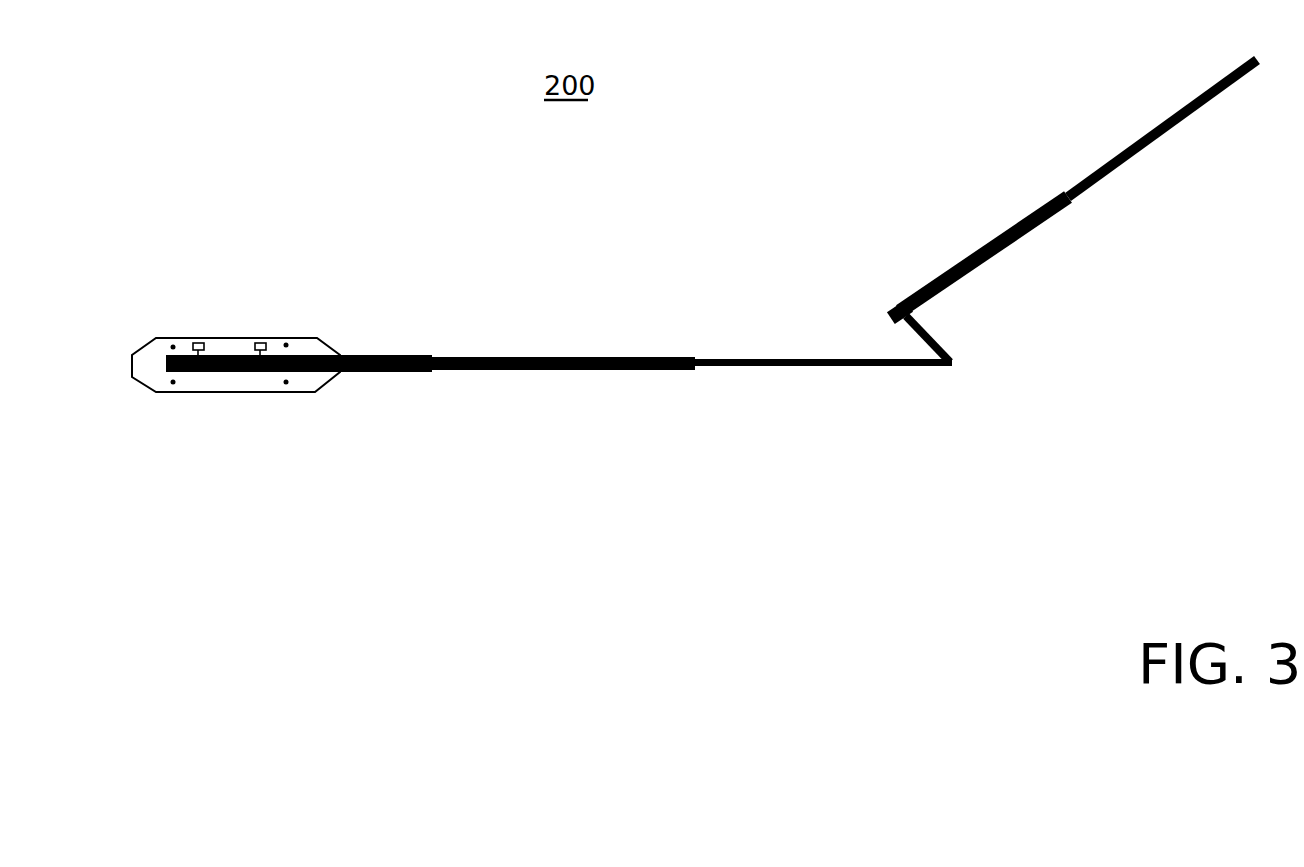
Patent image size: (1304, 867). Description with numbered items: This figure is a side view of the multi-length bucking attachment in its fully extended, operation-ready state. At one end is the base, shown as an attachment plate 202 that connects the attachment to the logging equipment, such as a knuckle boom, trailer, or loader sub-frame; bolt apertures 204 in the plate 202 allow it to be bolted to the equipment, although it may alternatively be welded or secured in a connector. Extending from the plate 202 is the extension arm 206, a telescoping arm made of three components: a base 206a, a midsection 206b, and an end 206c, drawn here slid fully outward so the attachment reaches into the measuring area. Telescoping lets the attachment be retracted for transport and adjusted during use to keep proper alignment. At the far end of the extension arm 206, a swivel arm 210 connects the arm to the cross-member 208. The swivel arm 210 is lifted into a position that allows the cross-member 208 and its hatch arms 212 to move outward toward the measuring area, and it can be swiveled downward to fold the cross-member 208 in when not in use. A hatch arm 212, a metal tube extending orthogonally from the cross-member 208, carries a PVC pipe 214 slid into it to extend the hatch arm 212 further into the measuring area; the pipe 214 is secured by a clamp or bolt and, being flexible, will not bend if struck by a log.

The attachment plate 202 is at (255, 392).
The bolt aperture 204 is at (173, 345).
The extension arm 206 is at (559, 374).
The base 206a is at (400, 372).
The midsection 206b is at (638, 370).
The end 206c is at (862, 367).
The cross-member 208 is at (900, 302).
The swivel arm 210 is at (935, 338).
The hatch arm 212 is at (987, 238).
The PVC pipe 214 is at (1098, 163).